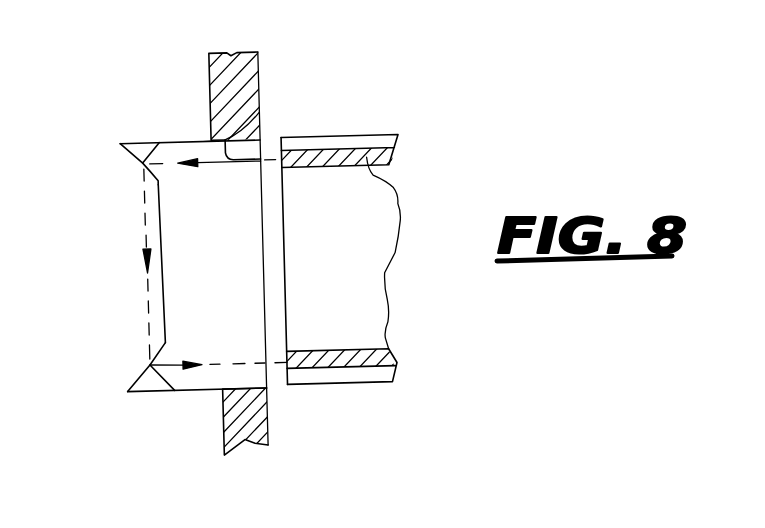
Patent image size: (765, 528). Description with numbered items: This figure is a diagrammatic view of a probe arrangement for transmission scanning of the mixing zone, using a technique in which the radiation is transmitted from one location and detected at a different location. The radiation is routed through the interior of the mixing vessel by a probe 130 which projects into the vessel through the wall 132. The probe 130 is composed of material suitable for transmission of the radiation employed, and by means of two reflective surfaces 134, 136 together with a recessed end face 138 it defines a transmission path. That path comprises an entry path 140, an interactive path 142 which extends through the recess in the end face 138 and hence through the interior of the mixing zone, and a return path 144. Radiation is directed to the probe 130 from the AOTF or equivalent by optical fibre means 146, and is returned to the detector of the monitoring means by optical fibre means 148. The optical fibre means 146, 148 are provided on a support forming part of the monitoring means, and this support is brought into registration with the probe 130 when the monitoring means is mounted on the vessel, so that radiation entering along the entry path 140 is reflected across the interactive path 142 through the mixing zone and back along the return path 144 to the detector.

The probe 130 is at (183, 140).
The wall 132 is at (258, 81).
The reflective surface 134 is at (118, 128).
The reflective surface 136 is at (143, 410).
The recessed end face 138 is at (163, 275).
The entry path 140 is at (257, 116).
The interactive path 142 is at (142, 218).
The return path 144 is at (220, 366).
The optical fibre means 146 is at (400, 203).
The optical fibre means 148 is at (373, 352).